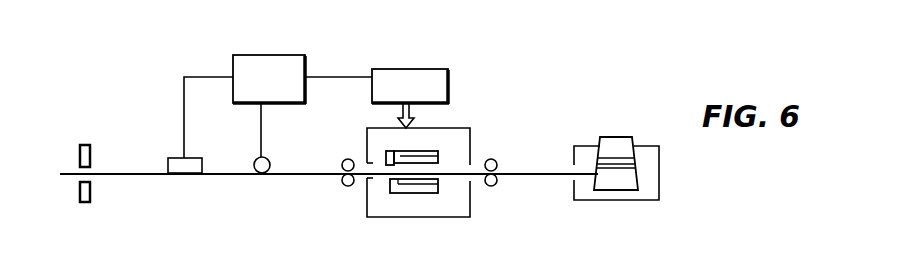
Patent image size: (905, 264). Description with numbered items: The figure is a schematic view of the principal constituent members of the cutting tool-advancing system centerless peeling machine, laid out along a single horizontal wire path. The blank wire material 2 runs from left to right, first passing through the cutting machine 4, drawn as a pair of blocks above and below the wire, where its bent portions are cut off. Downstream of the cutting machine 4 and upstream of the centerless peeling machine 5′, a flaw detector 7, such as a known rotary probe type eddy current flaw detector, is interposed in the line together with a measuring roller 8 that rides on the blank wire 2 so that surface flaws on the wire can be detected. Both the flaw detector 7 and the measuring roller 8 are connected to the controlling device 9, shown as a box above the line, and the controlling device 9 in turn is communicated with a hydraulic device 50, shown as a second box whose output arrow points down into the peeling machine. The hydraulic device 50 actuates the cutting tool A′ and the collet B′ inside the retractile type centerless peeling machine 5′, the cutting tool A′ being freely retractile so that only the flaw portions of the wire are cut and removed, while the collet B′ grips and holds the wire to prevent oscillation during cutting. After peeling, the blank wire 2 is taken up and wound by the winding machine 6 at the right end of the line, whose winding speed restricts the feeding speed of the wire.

The blank wire material 2 is at (143, 170).
The cutting machine 4 is at (90, 143).
The centerless peeling machine 5′ is at (458, 141).
The winding machine 6 is at (608, 143).
The flaw detector 7 is at (208, 143).
The measuring roller 8 is at (269, 168).
The controlling device 9 is at (269, 38).
The hydraulic device 50 is at (418, 68).
The cutting tool A′ is at (387, 160).
The collet B′ is at (396, 152).